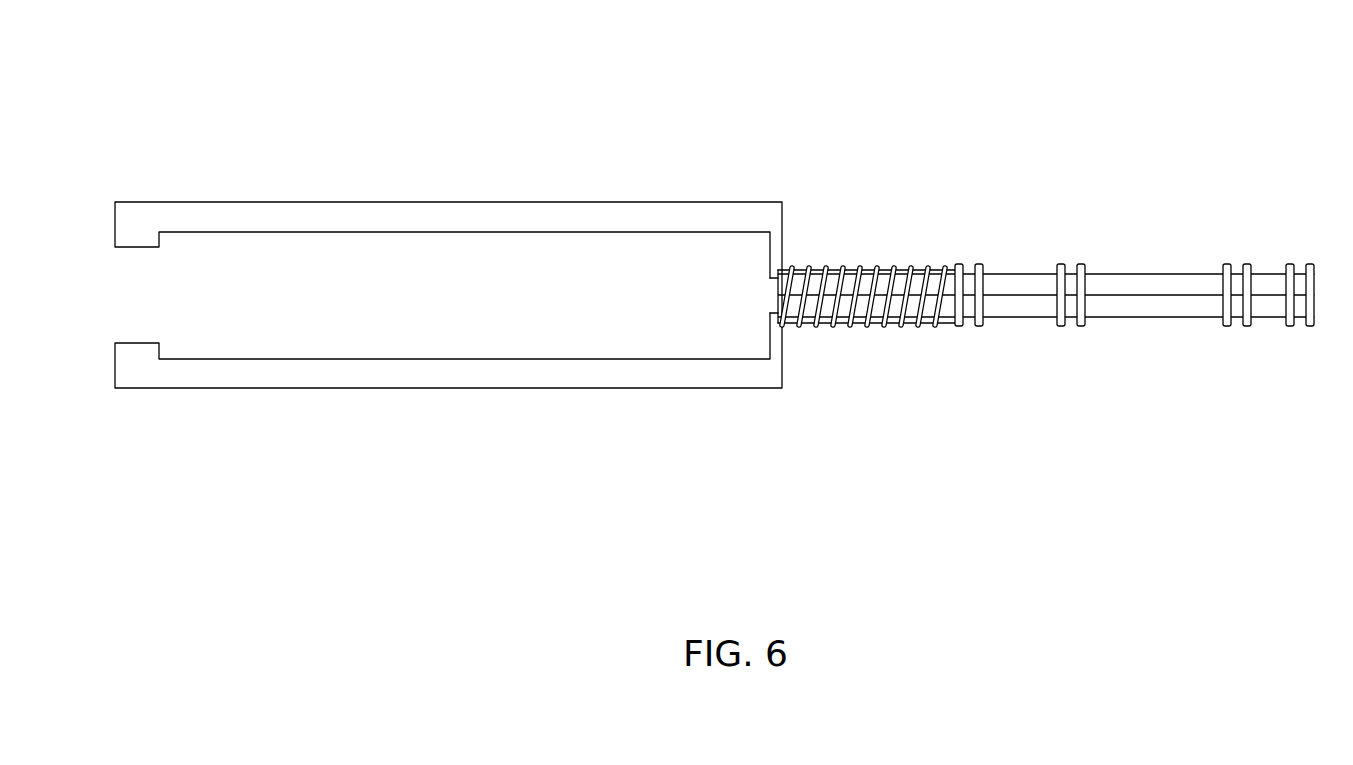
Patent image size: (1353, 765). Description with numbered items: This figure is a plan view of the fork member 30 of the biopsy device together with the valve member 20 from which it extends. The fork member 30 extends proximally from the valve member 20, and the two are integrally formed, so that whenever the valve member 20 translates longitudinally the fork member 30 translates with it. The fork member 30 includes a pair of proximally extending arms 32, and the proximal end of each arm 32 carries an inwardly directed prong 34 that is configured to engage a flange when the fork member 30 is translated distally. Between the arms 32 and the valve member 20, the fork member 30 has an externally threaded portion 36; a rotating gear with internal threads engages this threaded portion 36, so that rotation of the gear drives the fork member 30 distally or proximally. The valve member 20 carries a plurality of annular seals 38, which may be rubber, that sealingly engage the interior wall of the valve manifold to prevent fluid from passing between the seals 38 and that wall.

The valve member 20 is at (1162, 118).
The fork member 30 is at (485, 118).
The arm 32 is at (570, 212).
The prong 34 is at (143, 240).
The threaded portion 36 is at (872, 240).
The annular seal 38 is at (1080, 265).